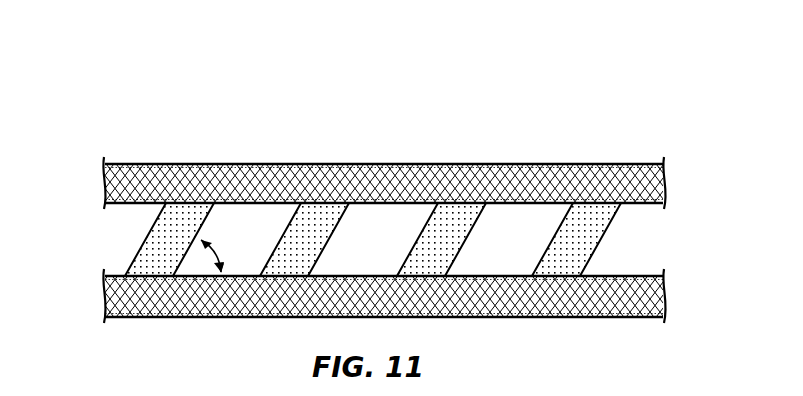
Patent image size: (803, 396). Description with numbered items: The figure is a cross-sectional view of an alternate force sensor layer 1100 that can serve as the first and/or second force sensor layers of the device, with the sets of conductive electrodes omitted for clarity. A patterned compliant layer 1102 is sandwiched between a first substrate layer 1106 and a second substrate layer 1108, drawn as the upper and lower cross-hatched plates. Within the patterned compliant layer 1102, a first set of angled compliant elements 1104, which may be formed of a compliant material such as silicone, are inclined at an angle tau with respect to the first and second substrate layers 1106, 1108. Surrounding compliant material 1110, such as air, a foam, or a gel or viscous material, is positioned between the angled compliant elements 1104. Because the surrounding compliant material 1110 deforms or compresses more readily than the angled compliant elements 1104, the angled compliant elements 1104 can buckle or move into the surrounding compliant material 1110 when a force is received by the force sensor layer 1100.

The force sensor layer 1100 is at (373, 204).
The patterned compliant layer 1102 is at (637, 243).
The angled compliant elements 1104 is at (146, 238).
The first substrate layer 1106 is at (102, 180).
The second substrate layer 1108 is at (102, 295).
The surrounding compliant material 1110 is at (250, 215).